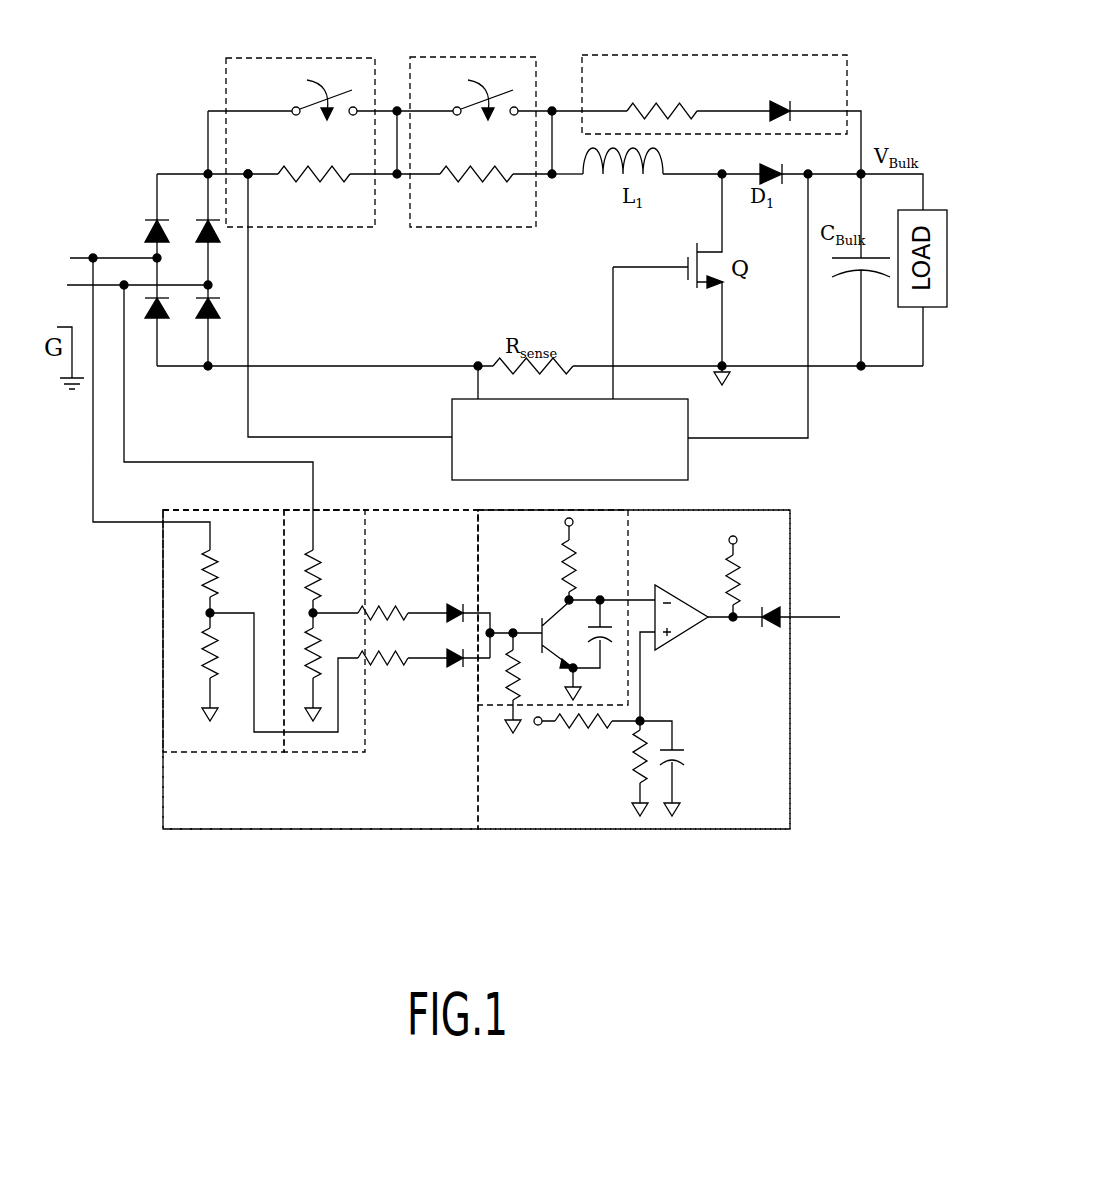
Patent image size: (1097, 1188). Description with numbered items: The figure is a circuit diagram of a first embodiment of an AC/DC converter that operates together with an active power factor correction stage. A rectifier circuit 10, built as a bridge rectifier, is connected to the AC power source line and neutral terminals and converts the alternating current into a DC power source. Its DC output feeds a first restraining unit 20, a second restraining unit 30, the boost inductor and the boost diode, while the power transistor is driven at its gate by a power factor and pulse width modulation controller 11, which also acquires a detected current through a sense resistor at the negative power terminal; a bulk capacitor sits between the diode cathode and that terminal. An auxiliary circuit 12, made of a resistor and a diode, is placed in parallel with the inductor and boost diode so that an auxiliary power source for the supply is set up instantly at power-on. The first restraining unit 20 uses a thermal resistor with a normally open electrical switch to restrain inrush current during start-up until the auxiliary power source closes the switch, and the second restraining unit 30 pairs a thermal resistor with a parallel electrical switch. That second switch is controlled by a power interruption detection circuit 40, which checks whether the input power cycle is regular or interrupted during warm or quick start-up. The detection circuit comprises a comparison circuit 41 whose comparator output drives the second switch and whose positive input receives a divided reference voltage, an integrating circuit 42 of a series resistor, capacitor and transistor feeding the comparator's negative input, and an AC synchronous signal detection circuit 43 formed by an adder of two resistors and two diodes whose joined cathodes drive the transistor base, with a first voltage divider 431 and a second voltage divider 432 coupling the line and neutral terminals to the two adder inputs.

The rectifier circuit 10 is at (133, 240).
The power factor and pulse width modulation controller 11 is at (526, 325).
The auxiliary circuit 12 is at (707, 73).
The first restraining unit 20 is at (320, 74).
The second restraining unit 30 is at (481, 74).
The power interruption detection circuit 40 is at (797, 540).
The comparison circuit 41 is at (722, 807).
The integrating circuit 42 is at (566, 621).
The AC synchronous signal detection circuit 43 is at (326, 696).
The first voltage divider 431 is at (248, 745).
The second voltage divider 432 is at (355, 743).